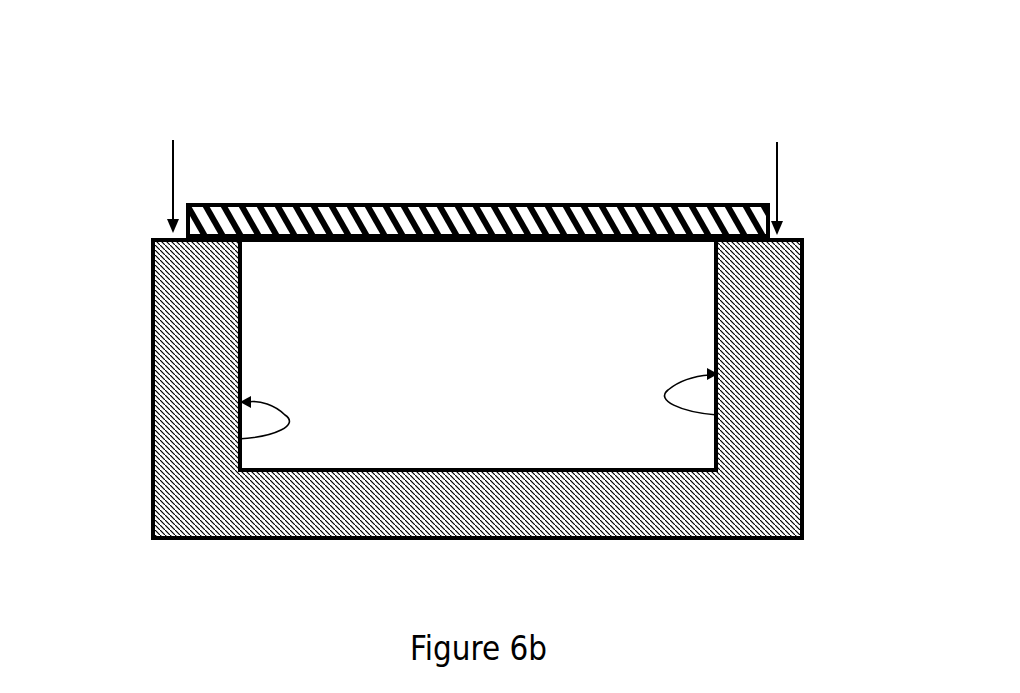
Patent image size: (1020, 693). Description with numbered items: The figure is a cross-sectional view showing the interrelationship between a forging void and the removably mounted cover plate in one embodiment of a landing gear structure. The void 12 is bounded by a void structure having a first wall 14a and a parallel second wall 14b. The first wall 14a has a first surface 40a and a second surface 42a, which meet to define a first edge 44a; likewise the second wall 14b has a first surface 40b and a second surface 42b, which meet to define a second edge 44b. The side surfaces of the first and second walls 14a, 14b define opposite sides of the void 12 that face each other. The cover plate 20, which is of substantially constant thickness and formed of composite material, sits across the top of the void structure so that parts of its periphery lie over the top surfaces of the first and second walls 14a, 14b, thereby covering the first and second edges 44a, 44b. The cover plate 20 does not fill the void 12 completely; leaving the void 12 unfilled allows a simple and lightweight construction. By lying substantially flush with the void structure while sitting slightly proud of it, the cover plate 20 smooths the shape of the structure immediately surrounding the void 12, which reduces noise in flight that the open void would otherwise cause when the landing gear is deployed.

The void 12 is at (472, 381).
The cover plate 20 is at (530, 203).
The first wall 14a is at (185, 375).
The second wall 14b is at (767, 362).
The first surface of first wall 40a is at (238, 439).
The first surface of second wall 40b is at (717, 415).
The second surface of first wall 42a is at (162, 167).
The second surface of second wall 42b is at (767, 170).
The first edge 44a is at (240, 241).
The second edge 44b is at (727, 240).